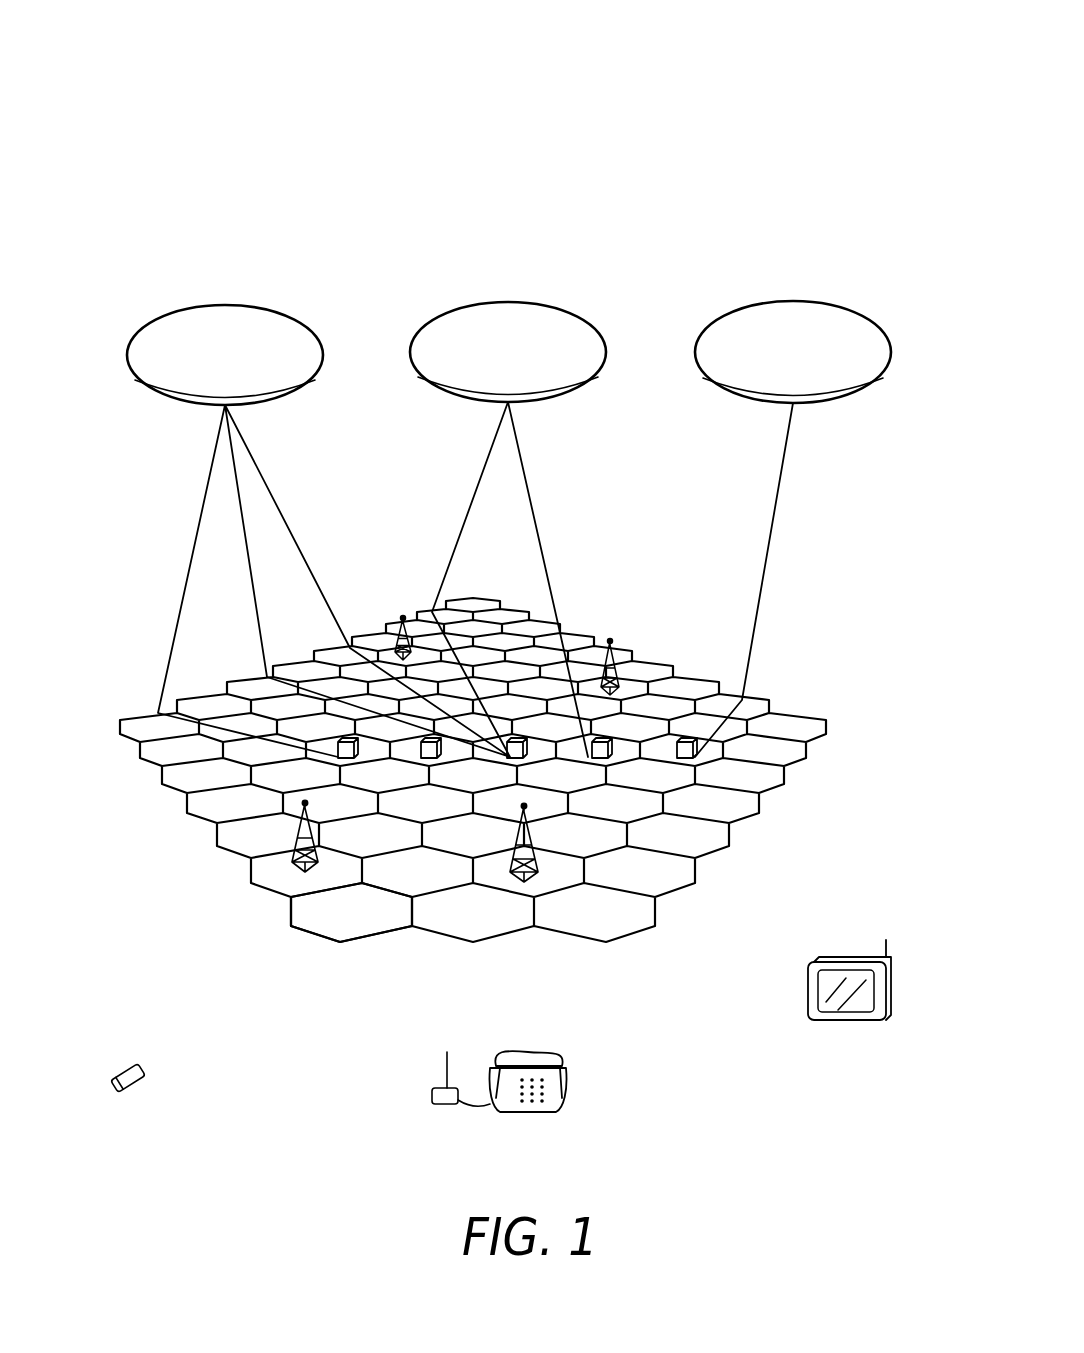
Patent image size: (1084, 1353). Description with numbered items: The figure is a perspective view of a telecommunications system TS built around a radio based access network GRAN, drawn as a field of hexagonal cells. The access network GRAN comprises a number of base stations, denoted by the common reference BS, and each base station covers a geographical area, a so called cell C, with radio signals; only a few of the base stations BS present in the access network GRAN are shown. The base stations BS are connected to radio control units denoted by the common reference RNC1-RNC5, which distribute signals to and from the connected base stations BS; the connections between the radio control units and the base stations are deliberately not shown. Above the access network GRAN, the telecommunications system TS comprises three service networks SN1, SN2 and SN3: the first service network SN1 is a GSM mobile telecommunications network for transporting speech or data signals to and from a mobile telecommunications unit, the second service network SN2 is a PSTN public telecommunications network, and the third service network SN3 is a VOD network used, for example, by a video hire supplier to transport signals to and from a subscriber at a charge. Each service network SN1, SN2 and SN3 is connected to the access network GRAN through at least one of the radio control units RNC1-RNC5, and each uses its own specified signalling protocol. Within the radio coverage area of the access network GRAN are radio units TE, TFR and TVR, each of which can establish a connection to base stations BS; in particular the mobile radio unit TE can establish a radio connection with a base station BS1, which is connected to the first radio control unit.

The telecommunications system TS is at (800, 158).
The first service network SN1 is at (225, 355).
The second service network SN2 is at (508, 352).
The third service network SN3 is at (793, 352).
The access network GRAN is at (795, 636).
The radio control units RNC1-RNC5 is at (972, 706).
The base stations BS is at (643, 862).
The base station BS1 is at (306, 870).
The cell C is at (342, 870).
The mobile radio unit TE is at (297, 814).
The radio unit TVR is at (888, 994).
The radio unit TFR is at (567, 1100).